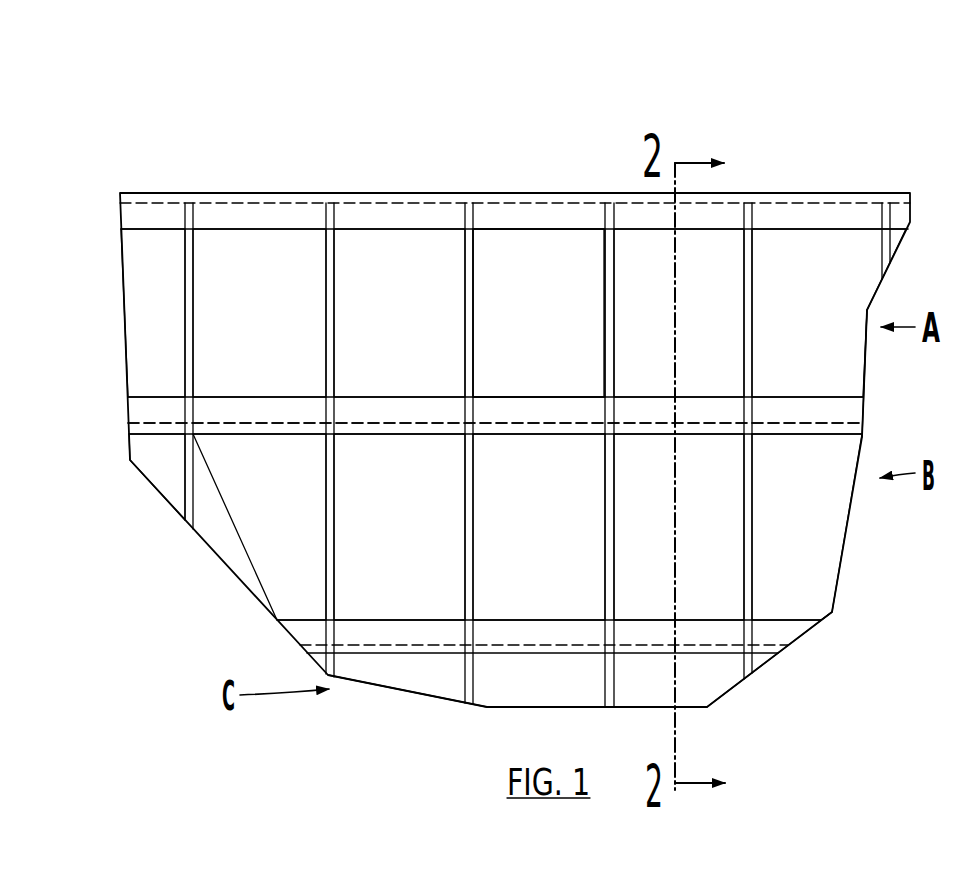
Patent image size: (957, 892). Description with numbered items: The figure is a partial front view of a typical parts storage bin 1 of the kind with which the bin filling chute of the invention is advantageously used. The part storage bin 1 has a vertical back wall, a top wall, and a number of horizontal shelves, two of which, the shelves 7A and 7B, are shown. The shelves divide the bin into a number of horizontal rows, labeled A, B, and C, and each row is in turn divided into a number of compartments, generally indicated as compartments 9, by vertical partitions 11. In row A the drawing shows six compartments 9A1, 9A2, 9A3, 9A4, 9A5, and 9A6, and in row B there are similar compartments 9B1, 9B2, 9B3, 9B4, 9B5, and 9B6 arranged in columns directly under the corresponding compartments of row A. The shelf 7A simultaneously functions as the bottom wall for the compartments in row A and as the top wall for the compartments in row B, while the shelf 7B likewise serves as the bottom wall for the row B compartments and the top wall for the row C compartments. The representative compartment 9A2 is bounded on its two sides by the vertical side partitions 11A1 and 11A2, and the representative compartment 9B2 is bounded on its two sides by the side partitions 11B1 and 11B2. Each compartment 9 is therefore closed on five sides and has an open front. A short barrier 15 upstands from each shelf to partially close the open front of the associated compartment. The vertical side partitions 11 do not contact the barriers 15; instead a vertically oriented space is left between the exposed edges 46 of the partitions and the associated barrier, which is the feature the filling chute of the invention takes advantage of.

The part storage bin 1 is at (268, 194).
The compartment 9 is at (507, 248).
The vertical partition 11 is at (320, 295).
The barrier 15 is at (170, 412).
The shelf 7A is at (830, 423).
The shelf 7B is at (447, 653).
The exposed edge 46 is at (745, 597).
The compartment 9A1 is at (827, 293).
The compartment 9A2 is at (710, 267).
The compartment 9A3 is at (567, 317).
The compartment 9A4 is at (425, 317).
The compartment 9A5 is at (288, 317).
The compartment 9A6 is at (172, 317).
The compartment 9B1 is at (812, 489).
The compartment 9B2 is at (718, 587).
The compartment 9B3 is at (568, 539).
The compartment 9B4 is at (428, 539).
The compartment 9B5 is at (288, 539).
The compartment 9B6 is at (165, 472).
The vertical side partition 11A1 is at (599, 280).
The vertical side partition 11A2 is at (753, 303).
The side partition 11B1 is at (603, 462).
The side partition 11B2 is at (747, 543).